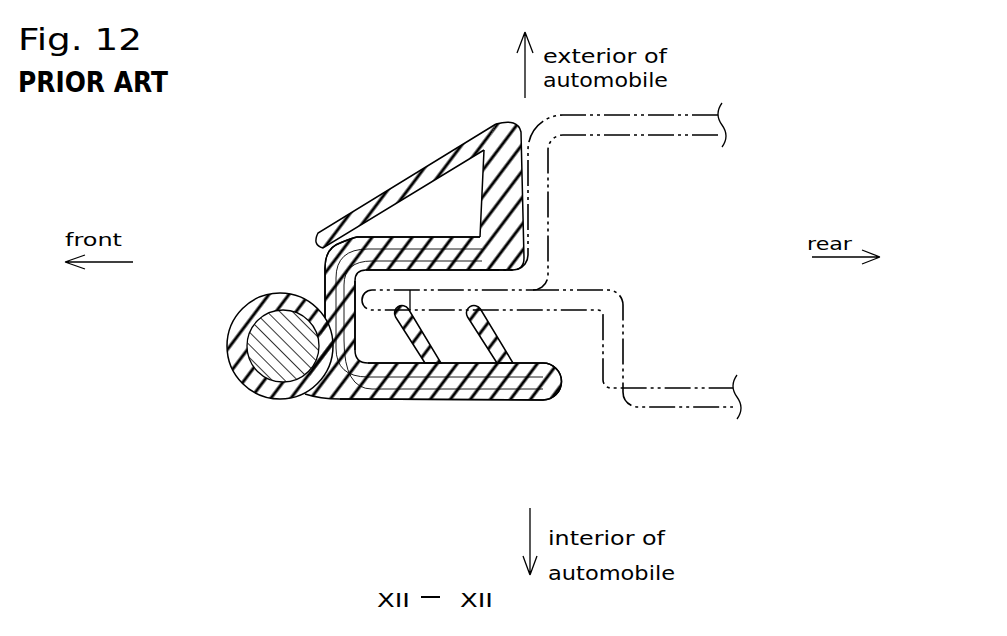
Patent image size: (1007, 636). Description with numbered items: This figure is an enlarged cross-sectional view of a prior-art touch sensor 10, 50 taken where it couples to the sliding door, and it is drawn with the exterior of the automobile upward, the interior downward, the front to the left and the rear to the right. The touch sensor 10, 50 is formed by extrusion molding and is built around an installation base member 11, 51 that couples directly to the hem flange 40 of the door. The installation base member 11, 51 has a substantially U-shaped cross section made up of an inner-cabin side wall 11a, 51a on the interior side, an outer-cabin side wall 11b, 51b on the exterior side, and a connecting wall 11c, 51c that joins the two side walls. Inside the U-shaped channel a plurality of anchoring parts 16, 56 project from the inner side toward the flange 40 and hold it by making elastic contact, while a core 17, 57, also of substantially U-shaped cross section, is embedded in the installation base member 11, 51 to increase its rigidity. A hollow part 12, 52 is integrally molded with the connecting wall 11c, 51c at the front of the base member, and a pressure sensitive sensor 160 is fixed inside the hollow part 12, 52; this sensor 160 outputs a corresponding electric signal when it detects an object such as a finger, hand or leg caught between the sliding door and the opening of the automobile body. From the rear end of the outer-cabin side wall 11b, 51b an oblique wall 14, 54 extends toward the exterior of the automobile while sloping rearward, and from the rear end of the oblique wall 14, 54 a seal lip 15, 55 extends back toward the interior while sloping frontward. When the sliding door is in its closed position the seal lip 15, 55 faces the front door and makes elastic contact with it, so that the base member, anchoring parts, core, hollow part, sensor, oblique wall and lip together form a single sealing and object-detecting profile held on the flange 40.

The touch sensor 10 is at (417, 318).
The touch sensor 50 is at (544, 440).
The installation base member 11 is at (430, 343).
The installation base member 51 is at (415, 398).
The inner-cabin side wall 11a is at (530, 403).
The inner-cabin side wall 51a is at (492, 400).
The outer-cabin side wall 11b is at (331, 221).
The outer-cabin side wall 51b is at (378, 237).
The connecting wall 11c is at (248, 285).
The connecting wall 51c is at (320, 281).
The hollow part 12 is at (222, 335).
The hollow part 52 is at (233, 328).
The oblique wall 14 is at (563, 190).
The oblique wall 54 is at (512, 190).
The seal lip 15 is at (364, 186).
The seal lip 55 is at (378, 196).
The anchoring parts 16 is at (477, 385).
The anchoring parts 56 is at (418, 338).
The core 17 is at (439, 378).
The core 57 is at (450, 385).
The hem flange 40 is at (506, 311).
The sensor 160 is at (262, 355).